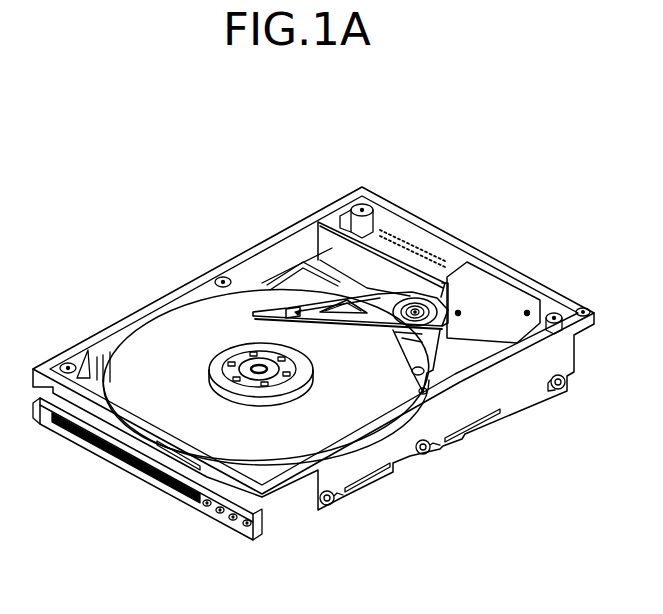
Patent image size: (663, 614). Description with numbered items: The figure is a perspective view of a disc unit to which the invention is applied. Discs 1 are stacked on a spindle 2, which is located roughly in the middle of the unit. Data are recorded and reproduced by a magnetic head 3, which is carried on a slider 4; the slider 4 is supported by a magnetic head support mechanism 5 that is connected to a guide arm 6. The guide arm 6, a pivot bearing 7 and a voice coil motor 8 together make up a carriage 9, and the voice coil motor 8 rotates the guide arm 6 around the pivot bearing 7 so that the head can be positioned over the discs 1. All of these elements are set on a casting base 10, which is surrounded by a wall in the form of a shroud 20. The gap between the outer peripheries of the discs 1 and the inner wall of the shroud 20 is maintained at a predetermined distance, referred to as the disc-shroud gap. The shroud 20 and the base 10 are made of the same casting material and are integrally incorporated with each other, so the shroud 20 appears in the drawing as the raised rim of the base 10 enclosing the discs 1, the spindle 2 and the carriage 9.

The disc 1 is at (160, 370).
The spindle 2 is at (233, 343).
The magnetic head 3 is at (243, 245).
The slider 4 is at (247, 308).
The magnetic head support mechanism 5 is at (277, 307).
The guide arm 6 is at (333, 290).
The pivot bearing 7 is at (440, 327).
The voice coil motor 8 is at (497, 300).
The carriage 9 is at (418, 299).
The casting base 10 is at (303, 513).
The shroud 20 is at (173, 290).